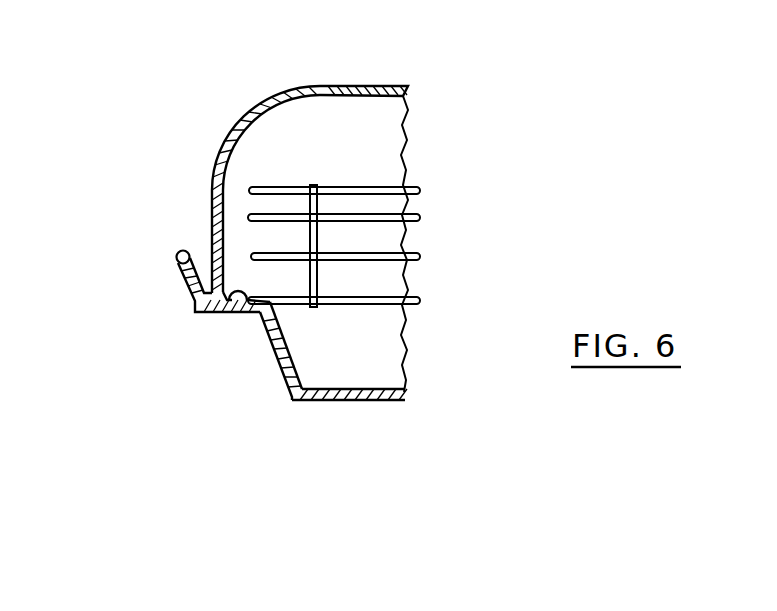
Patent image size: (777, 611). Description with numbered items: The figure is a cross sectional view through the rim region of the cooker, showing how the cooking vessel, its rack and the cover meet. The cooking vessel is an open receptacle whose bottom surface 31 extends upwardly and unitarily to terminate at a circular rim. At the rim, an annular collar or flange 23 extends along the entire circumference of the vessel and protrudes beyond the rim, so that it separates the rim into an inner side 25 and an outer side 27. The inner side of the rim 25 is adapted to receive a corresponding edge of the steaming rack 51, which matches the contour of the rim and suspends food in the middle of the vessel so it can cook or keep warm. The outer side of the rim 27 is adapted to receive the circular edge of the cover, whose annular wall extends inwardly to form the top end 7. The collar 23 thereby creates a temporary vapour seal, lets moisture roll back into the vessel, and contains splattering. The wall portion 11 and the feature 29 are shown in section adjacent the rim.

The top end 7 is at (320, 85).
The side wall 11 is at (210, 208).
The annular collar 23 is at (187, 285).
The inner side of the rim 25 is at (257, 311).
The outer side of the rim 27 is at (223, 310).
The base rib 29 is at (240, 307).
The bottom surface 31 is at (347, 389).
The steaming rack 51 is at (329, 185).